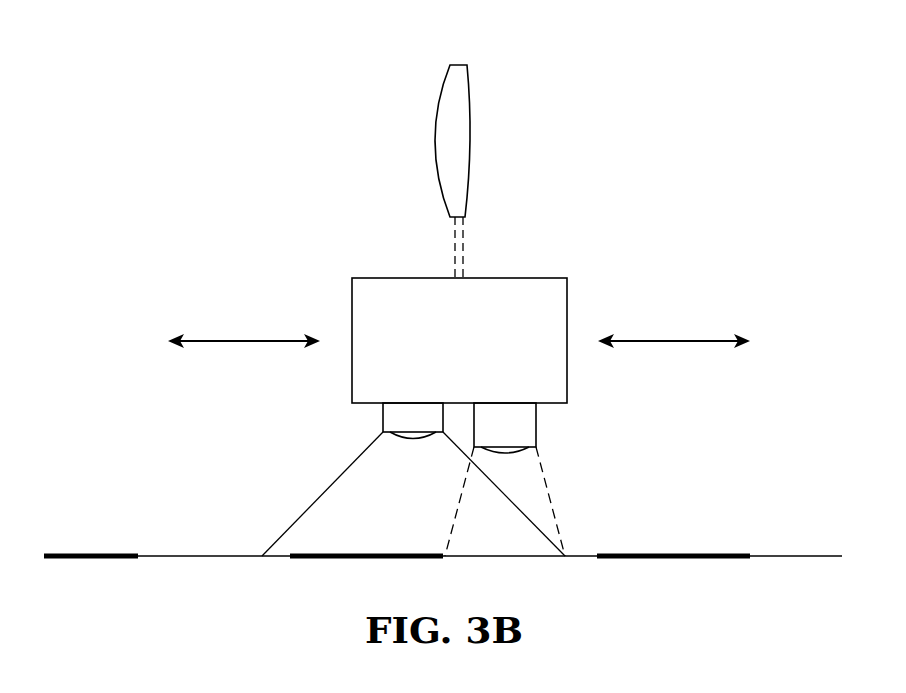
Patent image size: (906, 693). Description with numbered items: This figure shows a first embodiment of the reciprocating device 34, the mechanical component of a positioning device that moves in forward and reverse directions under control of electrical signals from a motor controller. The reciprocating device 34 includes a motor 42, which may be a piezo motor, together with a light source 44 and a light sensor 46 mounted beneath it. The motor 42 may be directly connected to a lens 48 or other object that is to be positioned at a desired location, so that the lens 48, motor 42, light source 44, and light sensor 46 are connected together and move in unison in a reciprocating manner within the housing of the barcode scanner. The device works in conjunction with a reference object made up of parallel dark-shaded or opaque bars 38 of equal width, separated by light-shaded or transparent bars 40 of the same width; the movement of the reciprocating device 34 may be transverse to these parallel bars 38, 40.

The reciprocating device 34 is at (702, 270).
The dark-shaded bars 38 is at (357, 558).
The light-shaded bars 40 is at (200, 556).
The motor 42 is at (382, 278).
The light source 44 is at (382, 415).
The light sensor 46 is at (538, 423).
The lens 48 is at (472, 127).